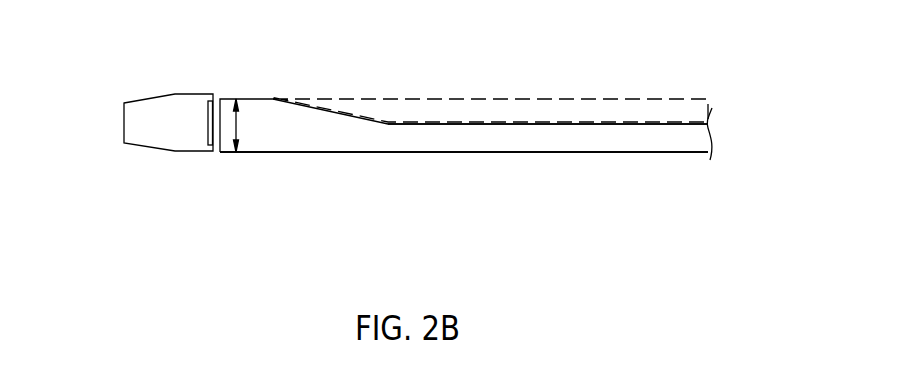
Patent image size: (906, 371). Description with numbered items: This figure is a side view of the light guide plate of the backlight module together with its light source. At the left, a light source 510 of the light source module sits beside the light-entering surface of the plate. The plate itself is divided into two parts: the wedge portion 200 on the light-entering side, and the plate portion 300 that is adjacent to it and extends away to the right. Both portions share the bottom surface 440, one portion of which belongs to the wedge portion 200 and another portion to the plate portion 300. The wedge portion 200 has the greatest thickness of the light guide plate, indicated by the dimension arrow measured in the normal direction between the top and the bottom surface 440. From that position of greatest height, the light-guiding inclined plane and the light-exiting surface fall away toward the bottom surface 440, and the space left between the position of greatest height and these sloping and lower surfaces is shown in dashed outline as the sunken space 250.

The light source 510 is at (148, 133).
The wedge portion 200 is at (277, 117).
The sunken space 250 is at (533, 112).
The plate portion 300 is at (583, 142).
The bottom surface 440 is at (452, 152).